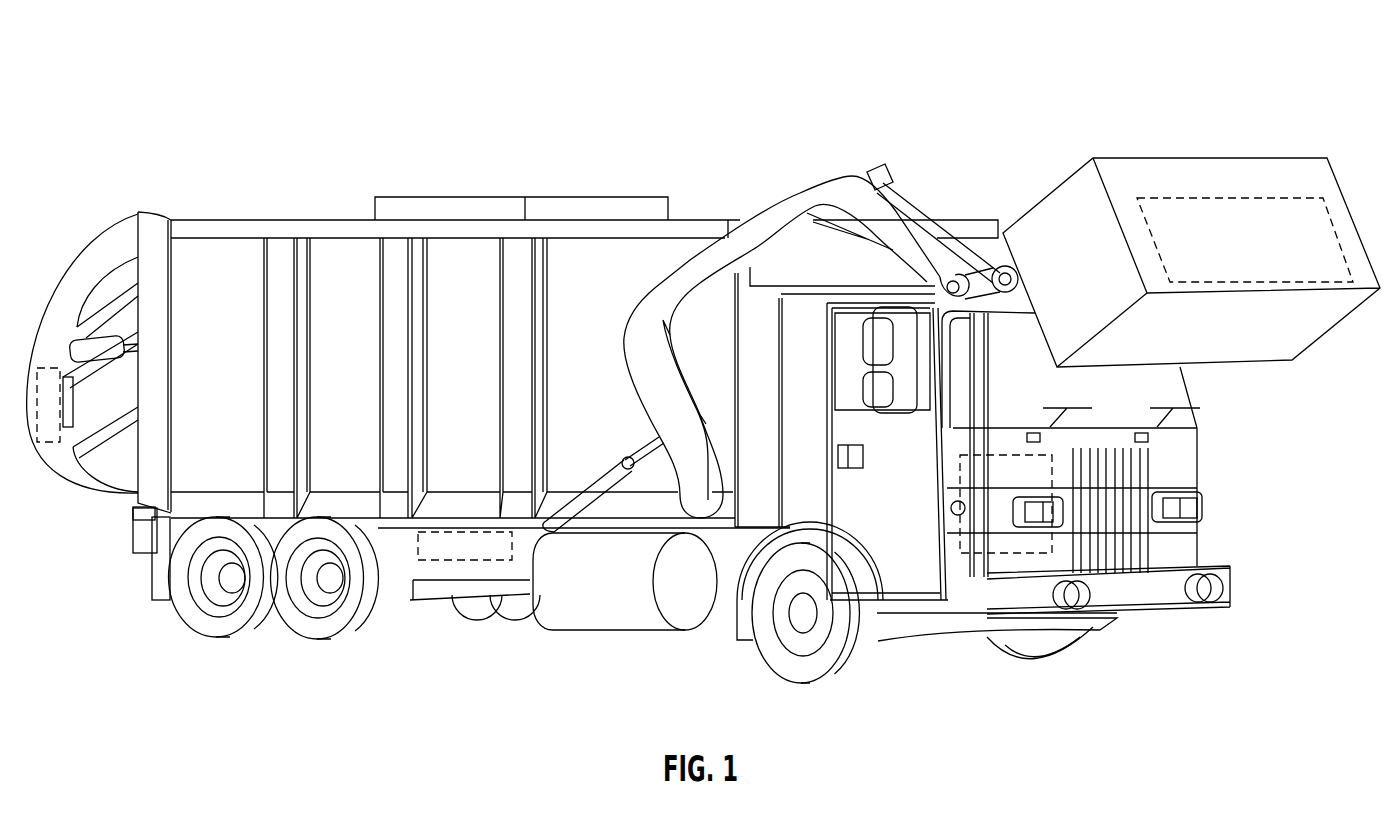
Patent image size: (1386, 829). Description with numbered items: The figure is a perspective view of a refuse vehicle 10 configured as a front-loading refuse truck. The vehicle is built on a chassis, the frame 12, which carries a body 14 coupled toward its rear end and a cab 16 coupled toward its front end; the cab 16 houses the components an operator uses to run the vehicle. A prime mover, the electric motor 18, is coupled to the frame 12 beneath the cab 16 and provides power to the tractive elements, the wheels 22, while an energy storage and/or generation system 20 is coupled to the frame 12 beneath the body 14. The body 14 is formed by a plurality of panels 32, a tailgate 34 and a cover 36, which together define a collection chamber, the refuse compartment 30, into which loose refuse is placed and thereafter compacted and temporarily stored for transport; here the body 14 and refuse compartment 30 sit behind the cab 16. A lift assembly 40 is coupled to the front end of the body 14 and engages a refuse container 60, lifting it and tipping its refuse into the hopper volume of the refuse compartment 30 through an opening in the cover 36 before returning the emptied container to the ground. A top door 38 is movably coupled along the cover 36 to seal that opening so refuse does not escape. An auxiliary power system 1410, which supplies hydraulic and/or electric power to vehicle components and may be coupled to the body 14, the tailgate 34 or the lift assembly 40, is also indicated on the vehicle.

The refuse vehicle 10 is at (305, 71).
The frame 12 is at (507, 563).
The body 14 is at (333, 232).
The cab 16 is at (960, 580).
The electric motor 18 is at (1003, 560).
The energy storage and/or generation system 20 is at (457, 593).
The wheels 22 is at (843, 667).
The refuse compartment 30 is at (708, 173).
The panels 32 is at (227, 260).
The tailgate 34 is at (88, 274).
The cover 36 is at (290, 218).
The top door 38 is at (437, 197).
The lift assembly 40 is at (894, 121).
The refuse container 60 is at (1217, 177).
The auxiliary power system 1410 is at (42, 444).